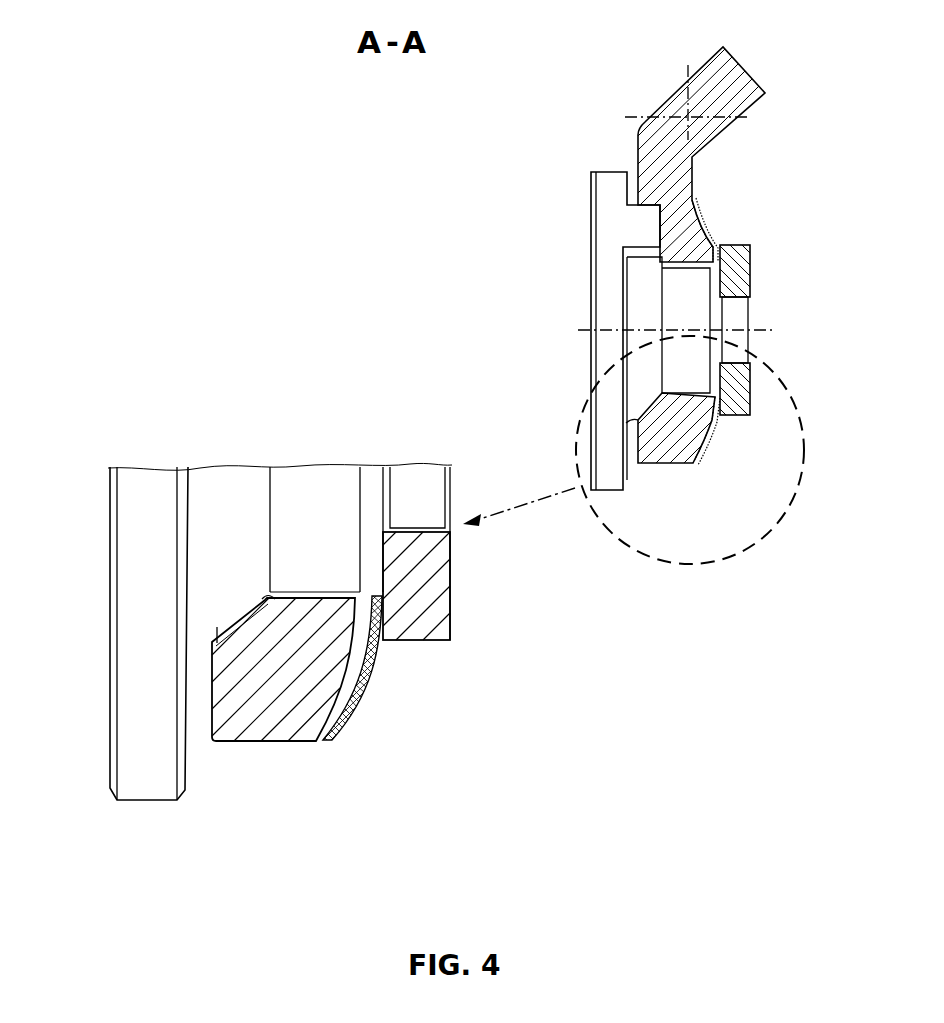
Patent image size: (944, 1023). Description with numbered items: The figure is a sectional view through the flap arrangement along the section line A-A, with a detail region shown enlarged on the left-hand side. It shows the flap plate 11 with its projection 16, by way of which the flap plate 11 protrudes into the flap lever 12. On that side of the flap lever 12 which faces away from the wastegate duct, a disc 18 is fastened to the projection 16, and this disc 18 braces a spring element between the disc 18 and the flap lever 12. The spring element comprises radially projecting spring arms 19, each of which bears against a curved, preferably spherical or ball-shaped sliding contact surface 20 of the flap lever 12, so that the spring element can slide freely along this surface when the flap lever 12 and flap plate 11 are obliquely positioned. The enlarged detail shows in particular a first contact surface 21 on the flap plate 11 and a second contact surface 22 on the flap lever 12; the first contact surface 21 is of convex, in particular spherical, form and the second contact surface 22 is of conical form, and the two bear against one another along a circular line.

The flap plate 11 is at (608, 247).
The flap lever 12 is at (688, 238).
The projection 16 is at (740, 317).
The disc 18 is at (737, 265).
The spring arm 19 is at (710, 432).
The sliding contact surface 20 is at (707, 238).
The first contact surface 21 is at (262, 598).
The second contact surface 22 is at (217, 642).